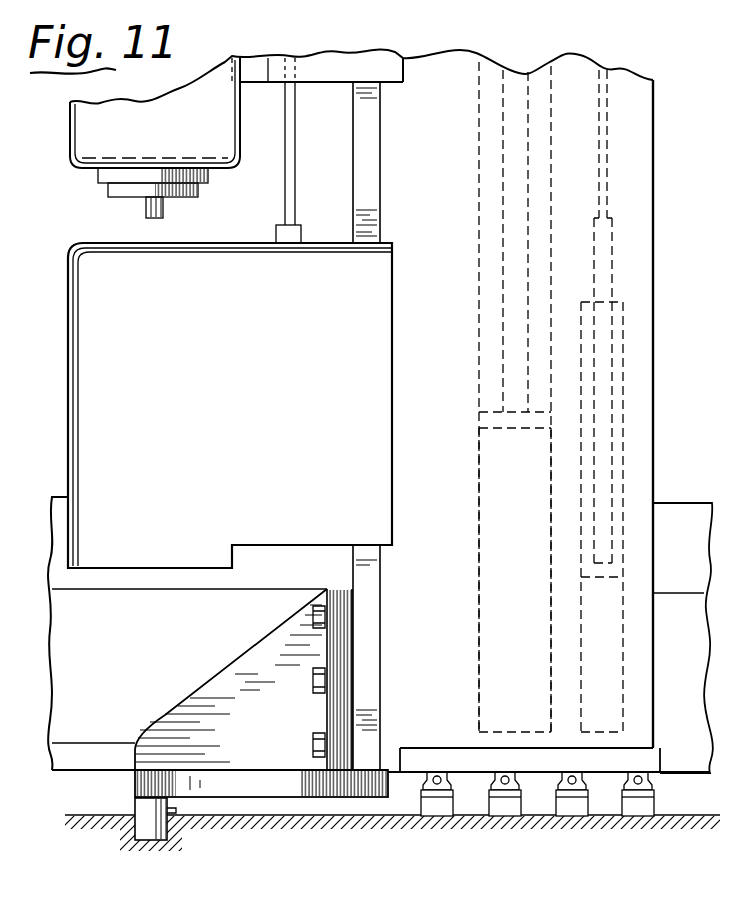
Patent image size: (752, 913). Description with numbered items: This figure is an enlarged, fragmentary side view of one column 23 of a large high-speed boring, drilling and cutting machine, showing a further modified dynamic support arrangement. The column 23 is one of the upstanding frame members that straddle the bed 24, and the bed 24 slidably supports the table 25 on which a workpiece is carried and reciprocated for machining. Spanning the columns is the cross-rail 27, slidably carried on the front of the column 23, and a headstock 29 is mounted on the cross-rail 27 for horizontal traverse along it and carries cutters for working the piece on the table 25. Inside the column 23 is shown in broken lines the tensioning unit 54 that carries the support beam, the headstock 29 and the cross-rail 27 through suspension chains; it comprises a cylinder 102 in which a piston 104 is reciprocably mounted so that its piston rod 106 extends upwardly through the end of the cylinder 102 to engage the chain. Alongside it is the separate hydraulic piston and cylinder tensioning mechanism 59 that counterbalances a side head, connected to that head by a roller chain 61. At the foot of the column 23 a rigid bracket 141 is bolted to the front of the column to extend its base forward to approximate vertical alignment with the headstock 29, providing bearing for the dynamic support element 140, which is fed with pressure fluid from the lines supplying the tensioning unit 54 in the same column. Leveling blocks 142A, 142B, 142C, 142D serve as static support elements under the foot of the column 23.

The column 23 is at (654, 327).
The bed 24 is at (122, 690).
The table 25 is at (283, 578).
The cross-rail 27 is at (405, 84).
The headstock 29 is at (240, 125).
The tensioning unit 54 is at (481, 397).
The hydraulic piston and cylinder tensioning mechanism 59 is at (603, 619).
The roller chain 61 is at (603, 145).
The cylinder 102 is at (478, 700).
The piston 104 is at (532, 428).
The piston rod 106 is at (505, 233).
The dynamic support element 140 is at (172, 832).
The rigid bracket 141 is at (275, 732).
The leveling block 142A is at (437, 806).
The leveling block 142B is at (532, 802).
The leveling block 142C is at (596, 805).
The leveling block 142D is at (664, 800).